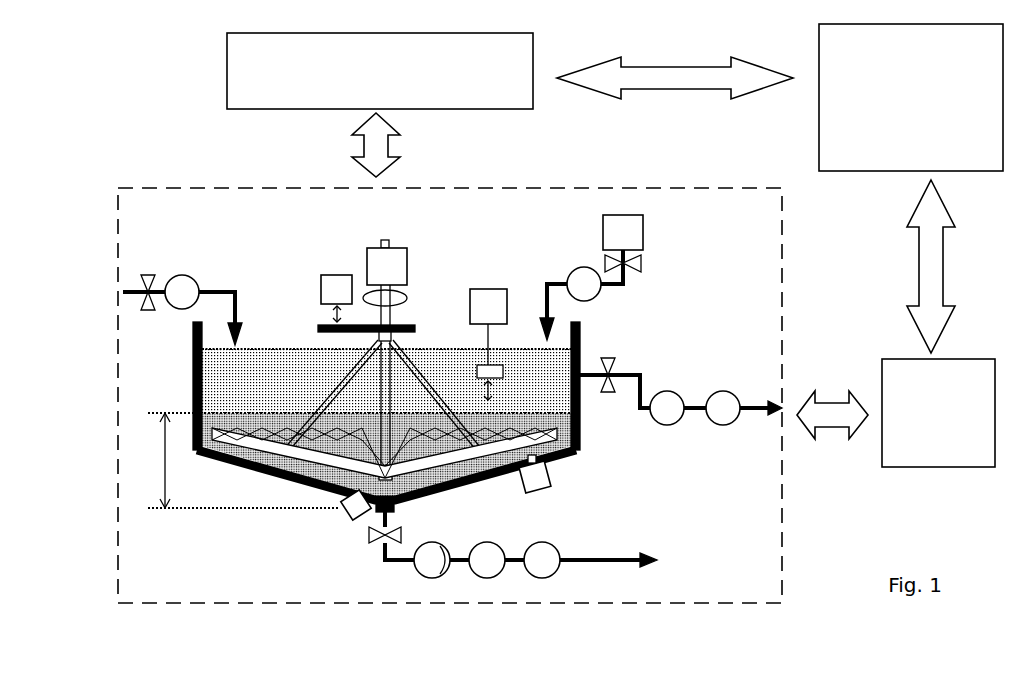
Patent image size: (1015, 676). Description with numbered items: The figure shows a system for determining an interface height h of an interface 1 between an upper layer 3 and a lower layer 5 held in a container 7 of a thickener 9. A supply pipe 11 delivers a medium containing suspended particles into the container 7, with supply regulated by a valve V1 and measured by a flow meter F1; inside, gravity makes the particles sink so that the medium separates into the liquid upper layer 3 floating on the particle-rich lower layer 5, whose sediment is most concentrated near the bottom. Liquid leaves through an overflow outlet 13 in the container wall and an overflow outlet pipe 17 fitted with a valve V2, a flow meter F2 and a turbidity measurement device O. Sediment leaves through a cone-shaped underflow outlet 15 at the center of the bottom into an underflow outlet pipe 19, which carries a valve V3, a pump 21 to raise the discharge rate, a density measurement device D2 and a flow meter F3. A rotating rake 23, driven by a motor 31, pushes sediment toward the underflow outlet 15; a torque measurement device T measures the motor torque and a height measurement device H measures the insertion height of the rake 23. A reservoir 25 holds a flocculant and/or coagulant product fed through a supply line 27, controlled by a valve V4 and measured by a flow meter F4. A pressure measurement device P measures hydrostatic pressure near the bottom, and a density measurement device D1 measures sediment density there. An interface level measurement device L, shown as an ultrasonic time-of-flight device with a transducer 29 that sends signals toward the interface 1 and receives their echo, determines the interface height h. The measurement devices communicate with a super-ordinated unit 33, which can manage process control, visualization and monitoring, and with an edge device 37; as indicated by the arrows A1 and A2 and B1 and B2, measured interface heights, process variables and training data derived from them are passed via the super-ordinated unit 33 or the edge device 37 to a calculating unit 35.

The interface 1 is at (275, 411).
The upper layer 3 is at (403, 394).
The lower layer 5 is at (403, 438).
The container 7 is at (194, 387).
The thickener 9 is at (185, 187).
The supply pipe 11 is at (237, 305).
The overflow outlet 13 is at (581, 379).
The underflow outlet 15 is at (395, 509).
The overflow outlet pipe 17 is at (693, 410).
The underflow outlet pipe 19 is at (563, 560).
The pump 21 is at (432, 560).
The rake 23 is at (262, 466).
The reservoir 25 is at (614, 242).
The supply line 27 is at (542, 292).
The transducer 29 is at (487, 370).
The motor 31 is at (381, 346).
The super-ordinated unit 33 is at (371, 81).
The calculating unit 35 is at (902, 107).
The edge device 37 is at (929, 421).
The arrow A1 is at (381, 146).
The arrow A2 is at (683, 72).
The arrow B1 is at (834, 411).
The arrow B2 is at (933, 267).
The valve V1 is at (147, 290).
The valve V2 is at (616, 372).
The valve V3 is at (378, 540).
The valve V4 is at (628, 268).
The flow meter F1 is at (182, 292).
The flow meter F2 is at (667, 408).
The flow meter F3 is at (542, 560).
The flow meter F4 is at (584, 284).
The torque measurement device T is at (387, 266).
The height measurement device H is at (331, 298).
The interface level measurement device L is at (483, 315).
The pressure measurement device P is at (356, 505).
The density measurement device D1 is at (535, 474).
The density measurement device D2 is at (487, 560).
The turbidity measurement device O is at (723, 408).
The interface height h is at (160, 462).